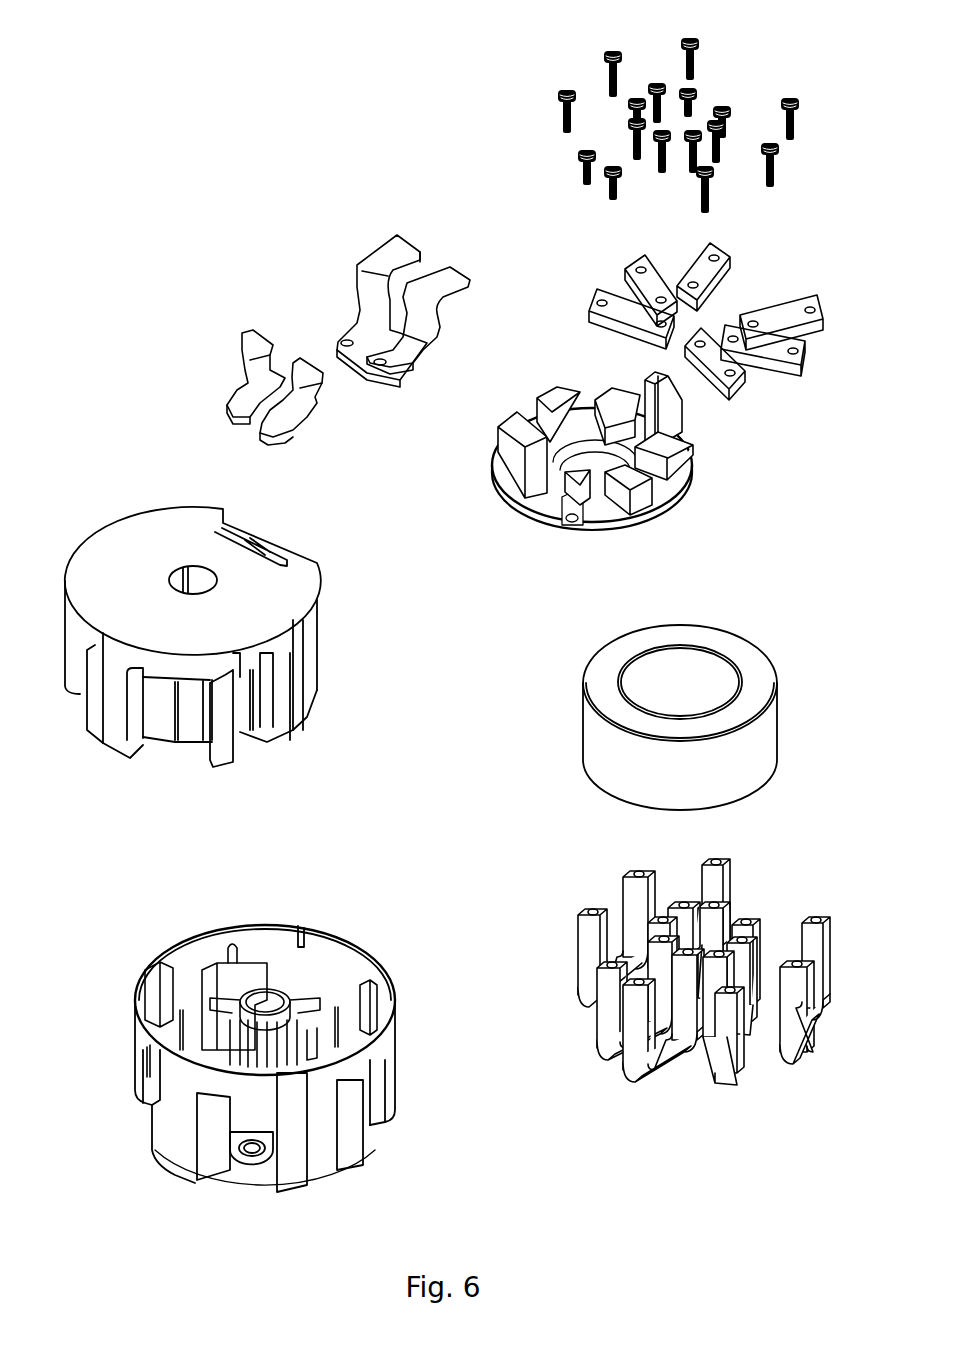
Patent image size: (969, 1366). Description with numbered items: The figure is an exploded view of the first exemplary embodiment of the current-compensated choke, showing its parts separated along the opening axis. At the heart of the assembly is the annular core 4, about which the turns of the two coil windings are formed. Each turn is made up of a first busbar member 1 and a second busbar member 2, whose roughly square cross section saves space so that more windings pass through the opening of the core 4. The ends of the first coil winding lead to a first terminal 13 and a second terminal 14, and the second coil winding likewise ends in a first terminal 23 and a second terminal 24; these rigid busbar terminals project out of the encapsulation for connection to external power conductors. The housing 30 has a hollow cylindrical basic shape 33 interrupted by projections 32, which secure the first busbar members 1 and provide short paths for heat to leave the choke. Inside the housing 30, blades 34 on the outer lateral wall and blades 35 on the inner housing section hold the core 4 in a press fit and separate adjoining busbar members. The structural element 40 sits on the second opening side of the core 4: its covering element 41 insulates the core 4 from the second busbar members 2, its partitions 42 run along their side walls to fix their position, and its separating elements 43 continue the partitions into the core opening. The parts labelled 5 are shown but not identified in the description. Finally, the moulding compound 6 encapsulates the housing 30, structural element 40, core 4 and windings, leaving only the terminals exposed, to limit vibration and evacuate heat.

The first busbar member 1 is at (750, 920).
The second busbar member 2 is at (775, 320).
The core 4 is at (753, 745).
The screws 5 is at (688, 65).
The moulding compound 6 is at (302, 593).
The first terminal 13 is at (310, 385).
The second terminal 14 is at (450, 277).
The first terminal 23 is at (250, 352).
The second terminal 24 is at (402, 247).
The housing 30 is at (266, 1023).
The projections 32 is at (197, 983).
The basic shape 33 is at (238, 957).
The blades 34 is at (340, 1013).
The blades 35 is at (317, 1040).
The structural element 40 is at (654, 474).
The covering element 41 is at (657, 500).
The partitions 42 is at (653, 483).
The separating elements 43 is at (588, 443).